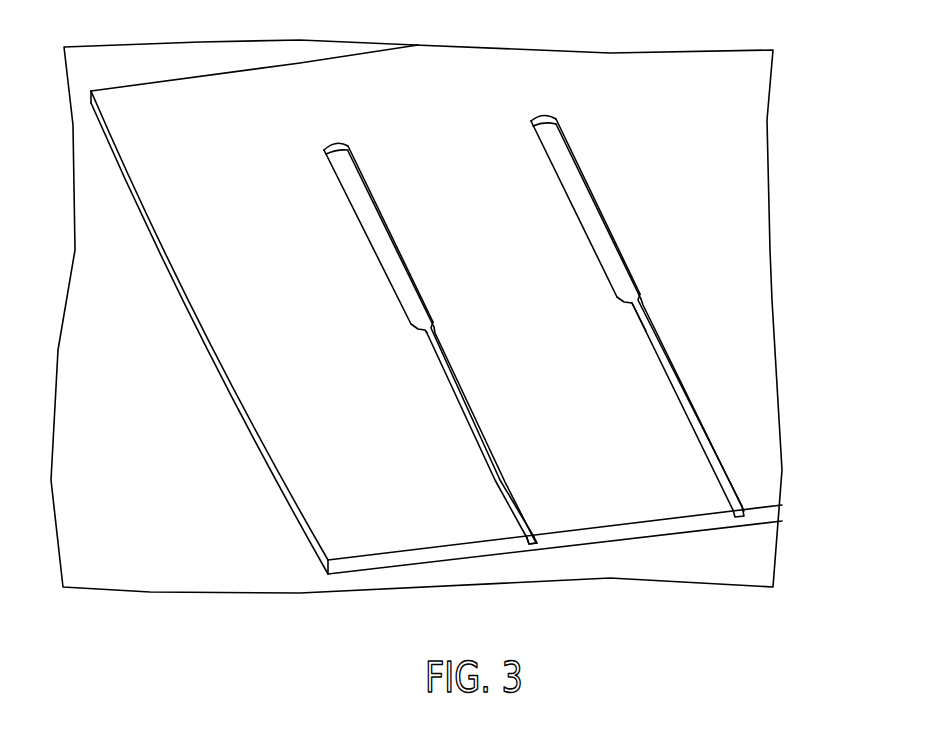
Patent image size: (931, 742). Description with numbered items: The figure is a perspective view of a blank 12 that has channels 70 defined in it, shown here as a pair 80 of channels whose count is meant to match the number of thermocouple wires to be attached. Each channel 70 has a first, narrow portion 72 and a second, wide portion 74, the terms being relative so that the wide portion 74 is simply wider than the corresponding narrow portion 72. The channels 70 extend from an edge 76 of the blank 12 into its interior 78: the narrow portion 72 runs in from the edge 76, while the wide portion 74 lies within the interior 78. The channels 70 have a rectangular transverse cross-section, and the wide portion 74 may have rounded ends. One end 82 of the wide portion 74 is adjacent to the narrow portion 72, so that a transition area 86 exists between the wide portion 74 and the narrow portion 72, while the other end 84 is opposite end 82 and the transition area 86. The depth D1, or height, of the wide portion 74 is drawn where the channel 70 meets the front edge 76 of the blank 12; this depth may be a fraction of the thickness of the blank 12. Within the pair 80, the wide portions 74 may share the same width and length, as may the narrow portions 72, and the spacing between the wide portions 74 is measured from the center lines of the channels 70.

The blank 12 is at (754, 122).
The channel 70 is at (467, 276).
The narrow portion 72 is at (486, 452).
The wide portion 74 is at (370, 227).
The edge 76 is at (97, 117).
The interior 78 is at (610, 187).
The pair of channels 80 is at (533, 116).
The end 82 is at (633, 298).
The other end 84 is at (543, 125).
The transition area 86 is at (637, 305).
The depth D1 is at (530, 542).